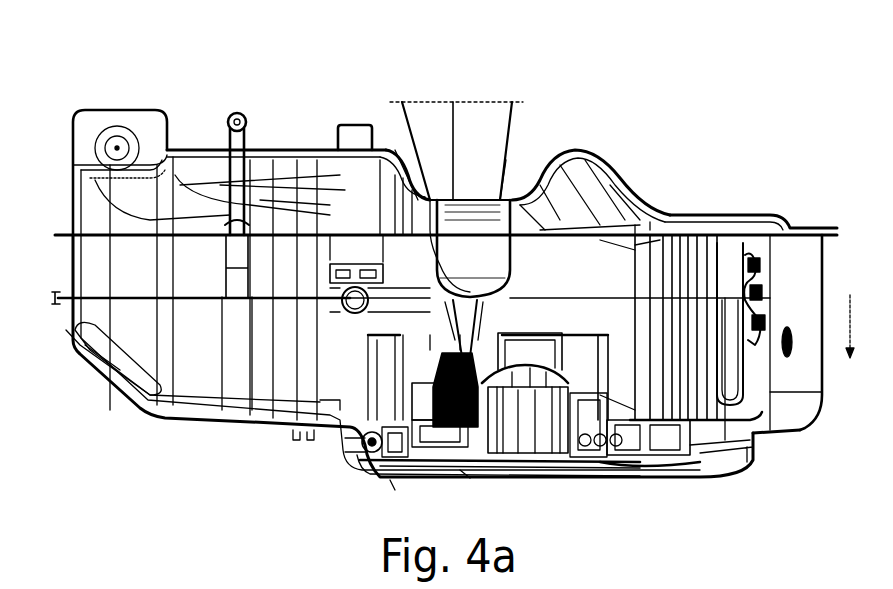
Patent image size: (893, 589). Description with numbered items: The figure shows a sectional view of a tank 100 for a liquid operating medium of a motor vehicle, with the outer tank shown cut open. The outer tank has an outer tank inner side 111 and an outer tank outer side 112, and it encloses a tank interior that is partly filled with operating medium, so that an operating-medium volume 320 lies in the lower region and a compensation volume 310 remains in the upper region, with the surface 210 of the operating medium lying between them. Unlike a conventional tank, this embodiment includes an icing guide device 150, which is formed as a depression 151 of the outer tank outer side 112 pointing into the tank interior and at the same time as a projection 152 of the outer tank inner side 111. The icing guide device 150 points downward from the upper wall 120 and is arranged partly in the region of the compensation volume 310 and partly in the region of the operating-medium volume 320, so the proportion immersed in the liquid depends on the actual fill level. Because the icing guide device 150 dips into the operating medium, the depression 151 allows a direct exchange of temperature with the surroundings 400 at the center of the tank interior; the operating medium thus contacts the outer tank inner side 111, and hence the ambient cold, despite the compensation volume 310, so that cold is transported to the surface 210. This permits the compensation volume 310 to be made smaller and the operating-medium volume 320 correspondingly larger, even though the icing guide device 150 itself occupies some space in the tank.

The tank 100 is at (140, 82).
The outer tank inner side 111 is at (205, 148).
The outer tank outer side 112 is at (197, 420).
The surroundings 400 is at (128, 460).
The compensation volume 310 is at (310, 225).
The depression 151 is at (410, 390).
The icing guide device 150 is at (500, 195).
The upper wall 120 is at (545, 182).
The projection 152 is at (400, 478).
The operating-medium volume 320 is at (628, 480).
The surface 210 is at (663, 216).